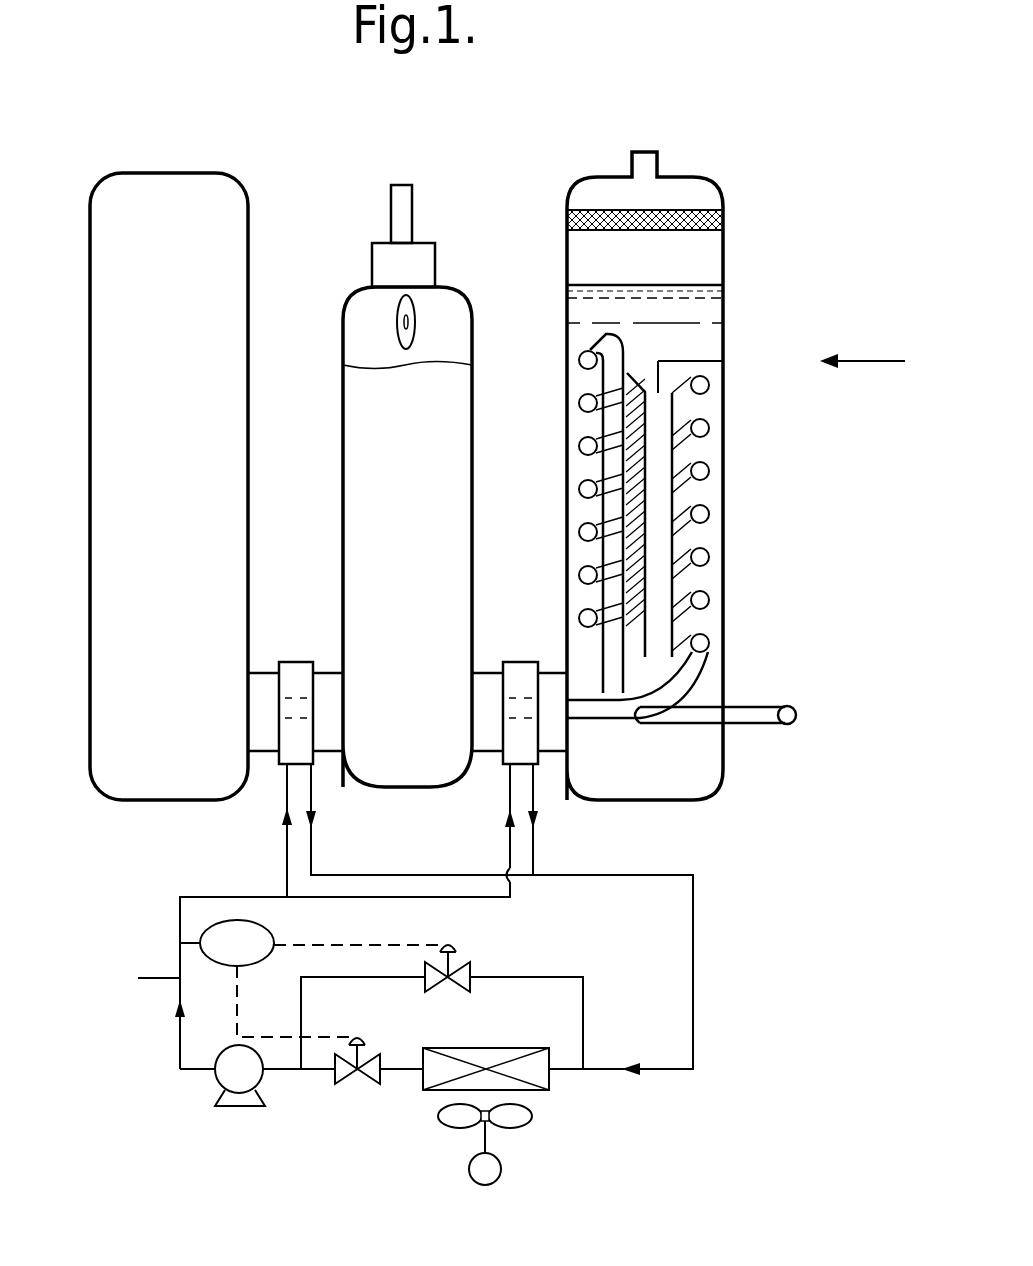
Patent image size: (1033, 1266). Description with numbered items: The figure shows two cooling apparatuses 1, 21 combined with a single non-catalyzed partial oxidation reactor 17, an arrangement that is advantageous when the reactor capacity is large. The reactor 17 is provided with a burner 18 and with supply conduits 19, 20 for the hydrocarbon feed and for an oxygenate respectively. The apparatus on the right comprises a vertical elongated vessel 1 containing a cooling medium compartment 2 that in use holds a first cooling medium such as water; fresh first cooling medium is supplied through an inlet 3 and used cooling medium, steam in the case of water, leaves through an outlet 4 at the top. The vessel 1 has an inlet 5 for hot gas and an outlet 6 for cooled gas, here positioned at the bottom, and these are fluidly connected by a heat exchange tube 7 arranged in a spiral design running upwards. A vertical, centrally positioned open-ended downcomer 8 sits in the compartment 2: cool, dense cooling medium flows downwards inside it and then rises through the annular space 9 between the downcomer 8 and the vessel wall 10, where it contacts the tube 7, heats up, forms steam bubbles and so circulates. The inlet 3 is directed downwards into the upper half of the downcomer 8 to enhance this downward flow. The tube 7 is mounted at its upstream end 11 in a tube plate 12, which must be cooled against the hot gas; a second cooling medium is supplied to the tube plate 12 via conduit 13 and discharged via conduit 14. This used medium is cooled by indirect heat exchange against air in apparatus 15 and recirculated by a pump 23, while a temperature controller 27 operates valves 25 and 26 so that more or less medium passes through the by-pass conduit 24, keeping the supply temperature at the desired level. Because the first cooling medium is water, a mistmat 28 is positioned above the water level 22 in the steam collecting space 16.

The vertical elongated vessel 1 is at (723, 318).
The cooling medium compartment 2 is at (715, 478).
The inlet 3 is at (885, 363).
The outlet 4 is at (642, 155).
The inlet for hot gas 5 is at (527, 662).
The outlet for cooled gas 6 is at (730, 723).
The heat exchange tube 7 is at (602, 720).
The downcomer 8 is at (673, 537).
The space 9 is at (713, 572).
The vessel wall 10 is at (725, 405).
The upstream end 11 is at (503, 707).
The tube plate 12 is at (503, 764).
The conduit 13 is at (512, 890).
The conduit 14 is at (614, 875).
The apparatus 15 is at (549, 1080).
The steam collecting space 16 is at (585, 252).
The non-catalyzed partial oxidation reactor 17 is at (343, 500).
The burner 18 is at (393, 260).
The supply conduit 19 is at (402, 170).
The supply conduit 20 is at (428, 218).
The apparatus 21 is at (90, 585).
The water level 22 is at (703, 285).
The pump 23 is at (218, 1082).
The by-pass conduit 24 is at (583, 1000).
The valve 25 is at (472, 962).
The valve 26 is at (367, 1078).
The temperature controller 27 is at (273, 929).
The mistmat 28 is at (723, 217).